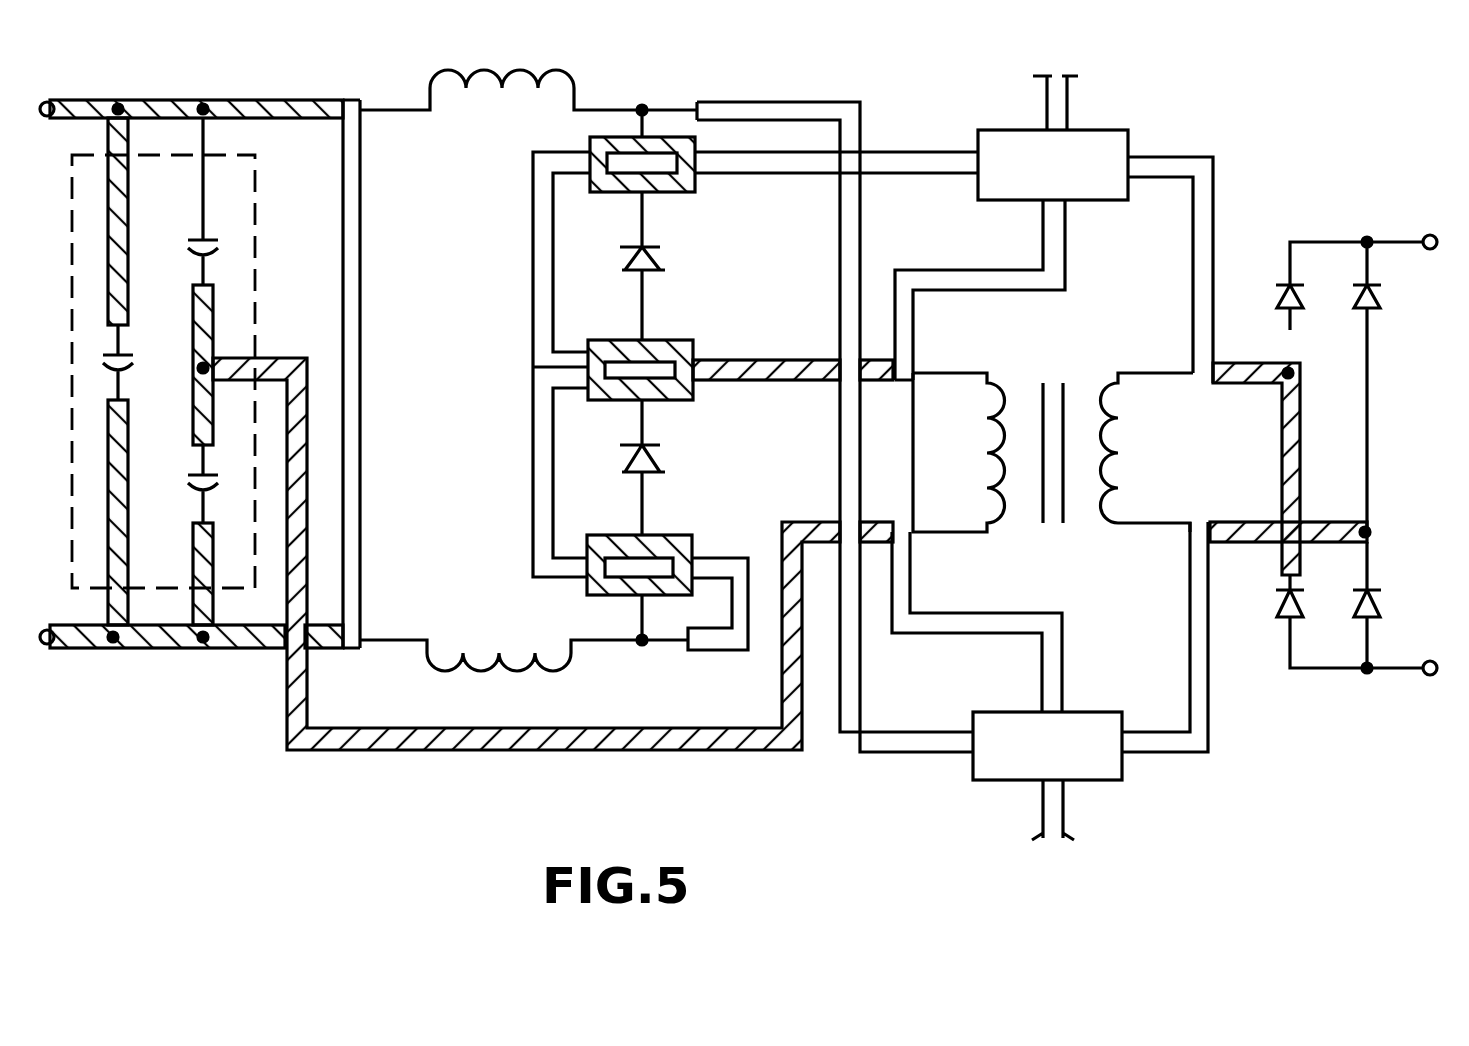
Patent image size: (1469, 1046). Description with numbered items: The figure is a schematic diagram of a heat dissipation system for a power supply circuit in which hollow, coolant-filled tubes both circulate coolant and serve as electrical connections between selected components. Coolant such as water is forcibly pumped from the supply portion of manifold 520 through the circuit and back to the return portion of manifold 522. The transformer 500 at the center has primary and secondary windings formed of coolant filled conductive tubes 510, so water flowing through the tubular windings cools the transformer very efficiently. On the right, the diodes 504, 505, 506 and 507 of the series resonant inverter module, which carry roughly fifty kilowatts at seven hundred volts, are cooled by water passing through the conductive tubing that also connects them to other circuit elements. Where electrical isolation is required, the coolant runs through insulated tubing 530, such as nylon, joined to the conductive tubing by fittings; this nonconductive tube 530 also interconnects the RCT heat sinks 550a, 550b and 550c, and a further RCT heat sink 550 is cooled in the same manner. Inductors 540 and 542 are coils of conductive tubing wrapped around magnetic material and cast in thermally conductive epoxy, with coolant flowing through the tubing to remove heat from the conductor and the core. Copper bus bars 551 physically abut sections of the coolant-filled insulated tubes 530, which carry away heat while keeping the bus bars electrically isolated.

The transformer 500 is at (1066, 344).
The diode 504 is at (1283, 285).
The diode 505 is at (1280, 618).
The diode 506 is at (1372, 295).
The diode 507 is at (1375, 605).
The coolant filled conductive tubes 510 is at (1005, 380).
The supply portion of manifold 520 is at (1100, 130).
The return portion of manifold 522 is at (1090, 780).
The insulated tubing 530 is at (362, 353).
The inductor 540 is at (577, 87).
The inductor 542 is at (575, 662).
The RCT heat sink 550 is at (1282, 470).
The RCT heat sink 550a is at (675, 193).
The RCT heat sink 550b is at (692, 340).
The RCT heat sink 550c is at (694, 536).
The copper bus bar 551 is at (244, 100).